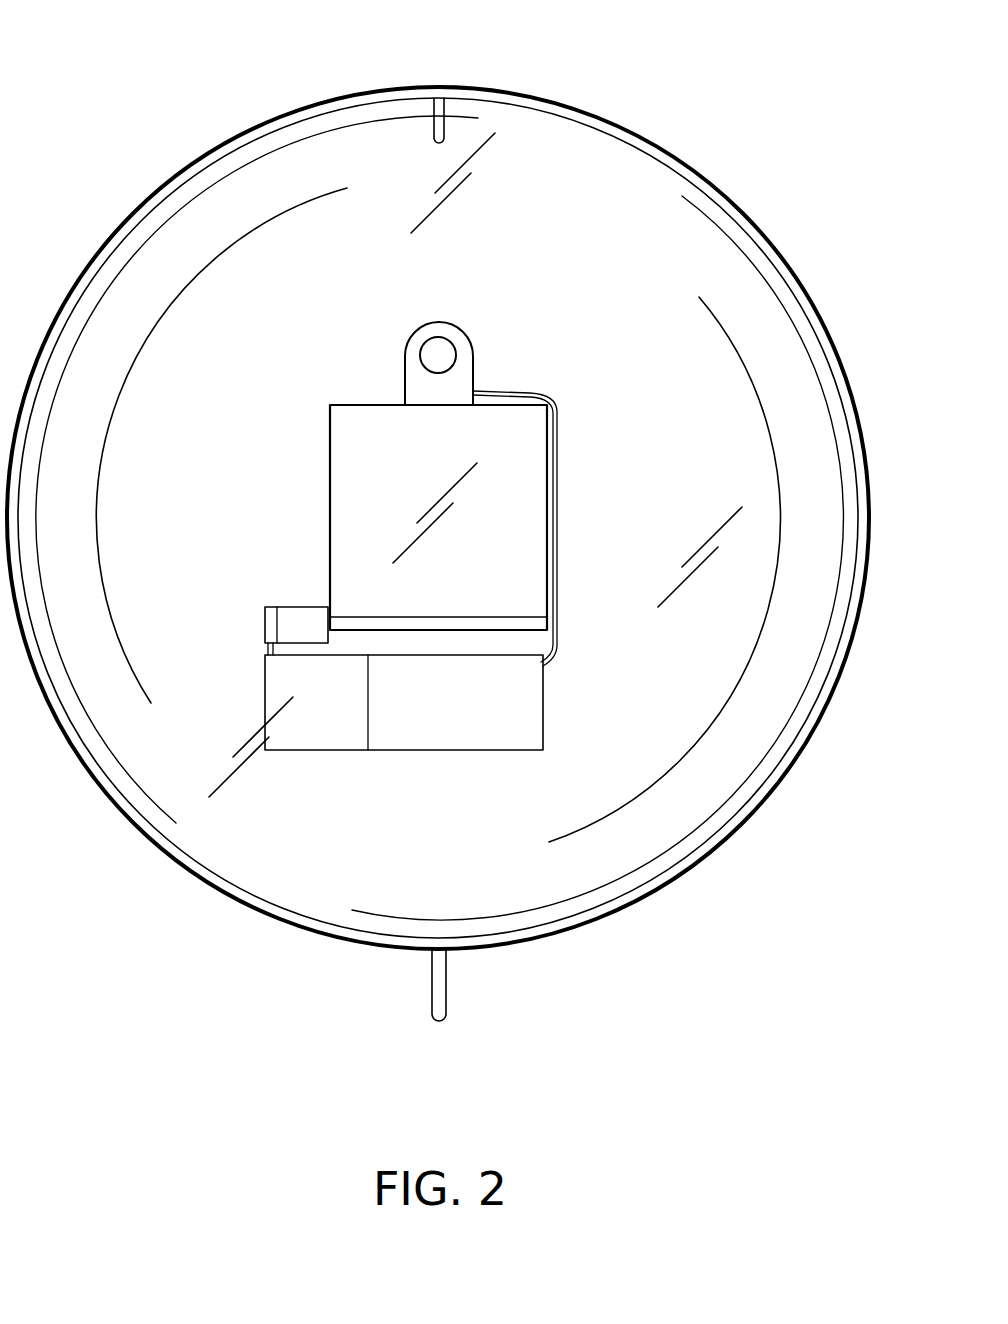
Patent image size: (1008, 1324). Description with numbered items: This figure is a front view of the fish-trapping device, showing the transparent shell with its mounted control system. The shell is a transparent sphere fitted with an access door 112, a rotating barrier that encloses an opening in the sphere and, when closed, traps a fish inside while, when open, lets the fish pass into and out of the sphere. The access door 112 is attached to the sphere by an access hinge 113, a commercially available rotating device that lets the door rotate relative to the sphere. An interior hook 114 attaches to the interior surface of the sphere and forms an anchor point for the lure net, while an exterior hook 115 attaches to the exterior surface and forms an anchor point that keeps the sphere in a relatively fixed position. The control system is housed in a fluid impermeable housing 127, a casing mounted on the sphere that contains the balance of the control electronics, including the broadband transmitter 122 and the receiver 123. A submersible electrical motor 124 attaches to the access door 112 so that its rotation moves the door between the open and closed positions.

The access door 112 is at (517, 480).
The access hinge 113 is at (513, 623).
The interior hook 114 is at (439, 133).
The exterior hook 115 is at (441, 1003).
The broadband transmitter 122 is at (453, 330).
The receiver 123 is at (443, 353).
The motor 124 is at (275, 625).
The housing 127 is at (493, 730).